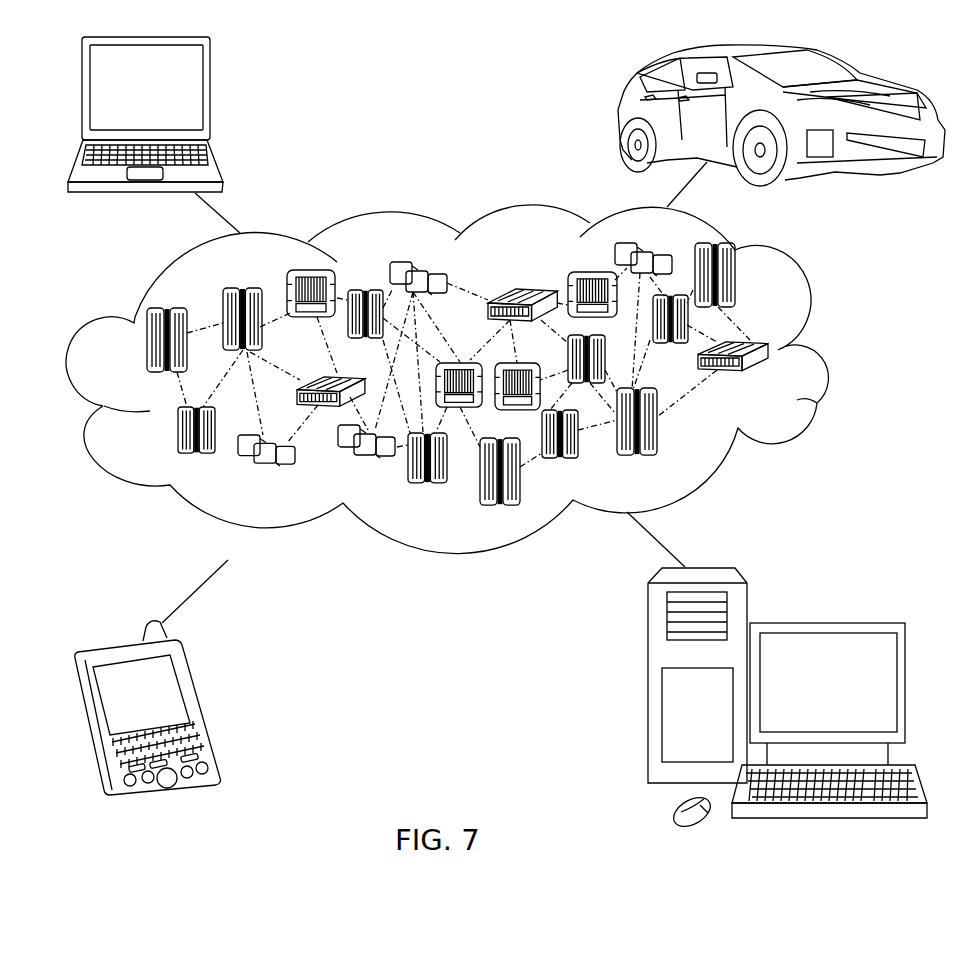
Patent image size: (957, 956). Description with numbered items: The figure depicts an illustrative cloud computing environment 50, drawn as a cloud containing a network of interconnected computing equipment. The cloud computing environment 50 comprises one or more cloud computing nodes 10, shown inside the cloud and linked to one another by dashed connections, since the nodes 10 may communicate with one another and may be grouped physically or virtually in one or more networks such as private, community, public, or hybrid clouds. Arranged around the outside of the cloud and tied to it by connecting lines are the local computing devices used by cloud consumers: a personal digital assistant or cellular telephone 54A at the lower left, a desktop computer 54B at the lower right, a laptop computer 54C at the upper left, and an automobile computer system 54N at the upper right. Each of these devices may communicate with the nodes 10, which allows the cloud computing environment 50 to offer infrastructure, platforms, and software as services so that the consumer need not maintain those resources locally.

The laptop computer 54C is at (210, 98).
The automobile computer system 54N is at (620, 112).
The personal digital assistant (PDA) or cellular telephone 54A is at (203, 706).
The desktop computer 54B is at (825, 623).
The cloud computing environment 50 is at (471, 379).
The cloud computing node 10 is at (781, 389).